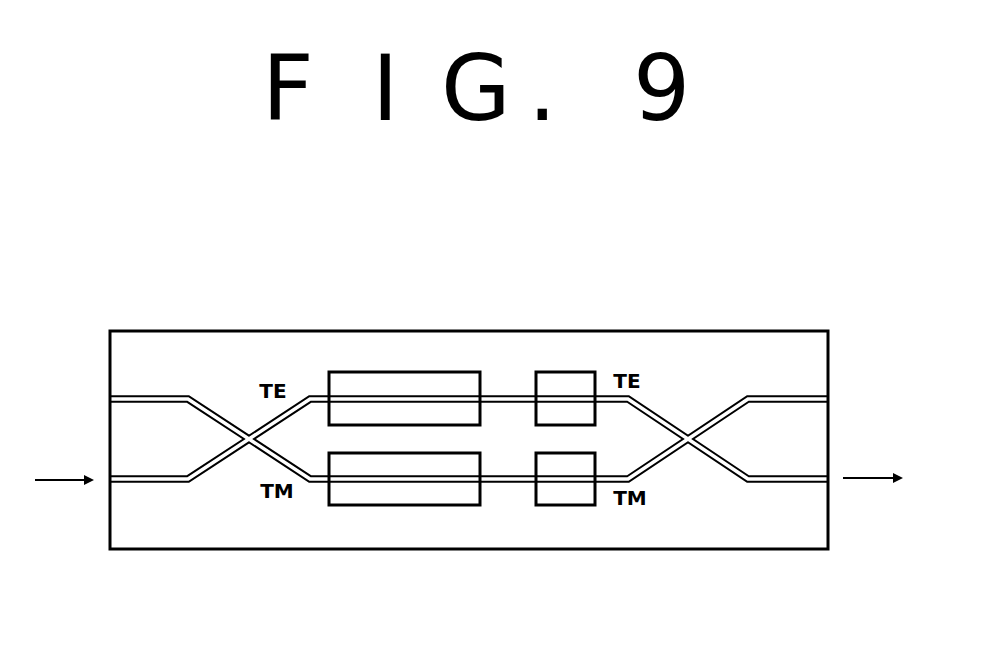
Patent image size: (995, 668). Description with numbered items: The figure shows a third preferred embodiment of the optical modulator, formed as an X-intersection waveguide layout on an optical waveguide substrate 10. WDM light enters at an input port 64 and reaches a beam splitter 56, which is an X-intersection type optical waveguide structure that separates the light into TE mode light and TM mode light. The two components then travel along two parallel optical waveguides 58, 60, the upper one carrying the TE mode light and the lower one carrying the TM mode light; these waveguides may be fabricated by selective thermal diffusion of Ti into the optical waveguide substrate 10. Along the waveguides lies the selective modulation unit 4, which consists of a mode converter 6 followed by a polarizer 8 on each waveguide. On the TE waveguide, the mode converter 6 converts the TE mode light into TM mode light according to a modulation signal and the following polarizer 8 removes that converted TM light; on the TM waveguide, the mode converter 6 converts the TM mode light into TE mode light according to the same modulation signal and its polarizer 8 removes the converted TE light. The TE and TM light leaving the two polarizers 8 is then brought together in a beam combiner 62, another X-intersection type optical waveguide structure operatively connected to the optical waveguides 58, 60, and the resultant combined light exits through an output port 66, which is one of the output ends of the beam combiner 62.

The selective modulation unit 4 is at (182, 314).
The mode converter 6 is at (398, 372).
The polarizer 8 is at (562, 372).
The optical waveguide substrate 10 is at (720, 331).
The beam splitter 56 is at (247, 449).
The optical waveguide 58 is at (307, 396).
The optical waveguide 60 is at (317, 483).
The beam combiner 62 is at (688, 446).
The input port 64 is at (106, 482).
The output port 66 is at (831, 481).